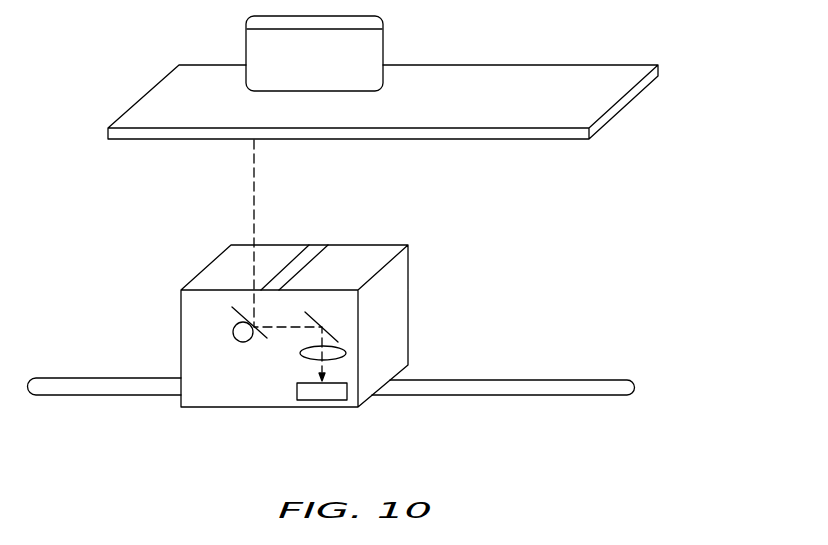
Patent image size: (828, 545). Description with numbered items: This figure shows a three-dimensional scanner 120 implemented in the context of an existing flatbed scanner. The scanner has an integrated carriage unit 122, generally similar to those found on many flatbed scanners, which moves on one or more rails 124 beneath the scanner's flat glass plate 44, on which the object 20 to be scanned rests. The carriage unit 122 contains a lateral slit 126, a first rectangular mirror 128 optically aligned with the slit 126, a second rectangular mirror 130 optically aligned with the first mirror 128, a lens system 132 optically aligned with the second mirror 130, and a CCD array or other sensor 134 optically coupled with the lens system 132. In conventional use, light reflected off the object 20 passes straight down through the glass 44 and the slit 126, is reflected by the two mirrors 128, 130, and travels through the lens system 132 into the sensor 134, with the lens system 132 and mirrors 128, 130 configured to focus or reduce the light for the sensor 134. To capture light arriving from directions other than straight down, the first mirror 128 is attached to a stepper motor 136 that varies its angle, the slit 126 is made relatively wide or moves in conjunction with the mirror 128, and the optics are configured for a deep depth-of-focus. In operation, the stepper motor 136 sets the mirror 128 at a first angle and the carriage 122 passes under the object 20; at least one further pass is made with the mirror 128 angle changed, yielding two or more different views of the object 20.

The object 20 is at (257, 47).
The flat glass plate 44 is at (479, 85).
The 3-D scanner 120 is at (580, 250).
The carriage unit 122 is at (210, 398).
The rails 124 is at (543, 388).
The lateral slit 126 is at (287, 258).
The first rectangular mirror 128 is at (228, 310).
The second rectangular mirror 130 is at (322, 316).
The lens system 132 is at (357, 353).
The sensor 134 is at (332, 395).
The stepper motor 136 is at (232, 333).